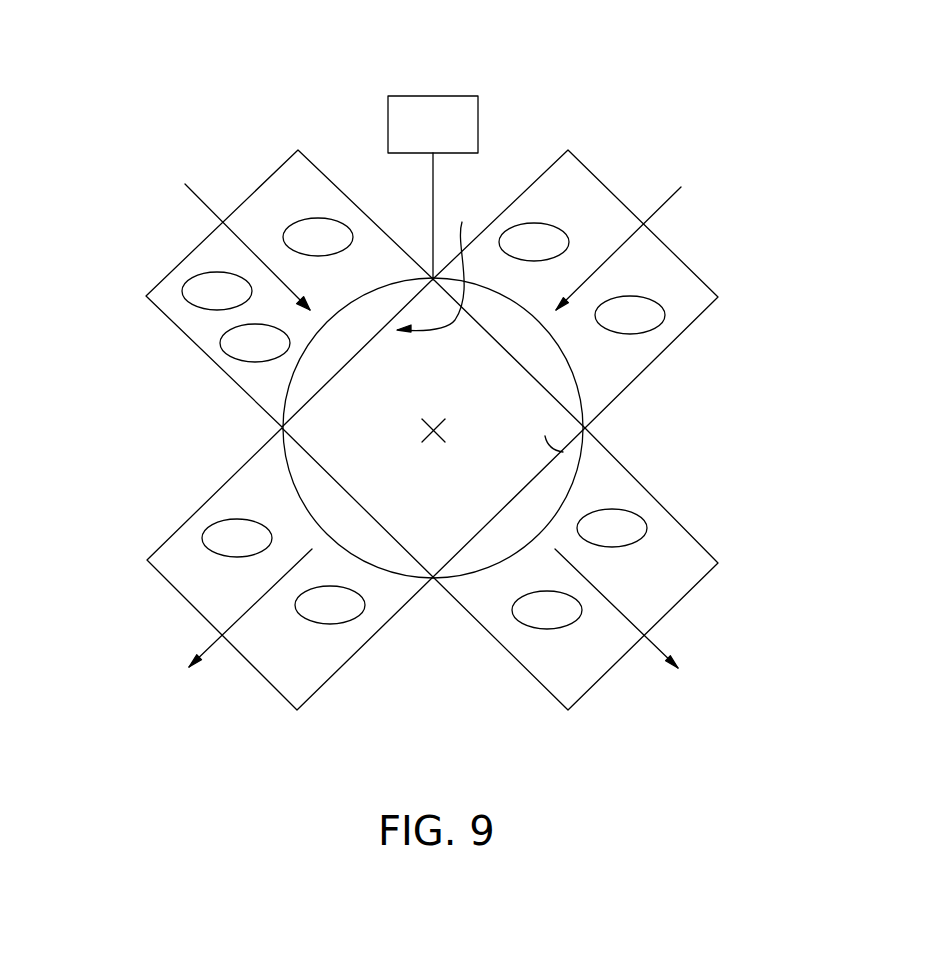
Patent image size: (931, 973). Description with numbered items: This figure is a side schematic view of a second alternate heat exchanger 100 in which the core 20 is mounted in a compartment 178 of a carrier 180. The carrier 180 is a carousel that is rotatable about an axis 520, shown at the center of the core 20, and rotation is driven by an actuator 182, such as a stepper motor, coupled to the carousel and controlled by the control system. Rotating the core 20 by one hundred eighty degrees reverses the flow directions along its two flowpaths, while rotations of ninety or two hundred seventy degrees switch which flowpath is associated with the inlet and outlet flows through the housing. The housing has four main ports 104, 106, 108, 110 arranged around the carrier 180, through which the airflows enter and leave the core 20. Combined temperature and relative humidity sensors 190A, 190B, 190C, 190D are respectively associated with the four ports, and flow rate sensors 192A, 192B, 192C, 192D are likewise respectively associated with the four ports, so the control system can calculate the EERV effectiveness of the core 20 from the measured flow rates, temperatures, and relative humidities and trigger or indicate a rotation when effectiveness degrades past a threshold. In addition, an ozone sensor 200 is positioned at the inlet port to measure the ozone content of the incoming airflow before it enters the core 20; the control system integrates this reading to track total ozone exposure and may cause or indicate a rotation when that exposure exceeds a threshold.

The heat exchanger 100 is at (503, 80).
The main port 104 is at (257, 163).
The main port 106 is at (610, 697).
The main port 108 is at (705, 257).
The main port 110 is at (158, 602).
The compartment 178 is at (440, 264).
The carrier 180 is at (581, 392).
The actuator 182 is at (415, 134).
The core 20 is at (578, 465).
The axis 520 is at (441, 419).
The combined temperature and relative humidity sensor 190A is at (217, 291).
The combined temperature and relative humidity sensor 190B is at (547, 610).
The combined temperature and relative humidity sensor 190C is at (534, 242).
The combined temperature and relative humidity sensor 190D is at (237, 538).
The flow sensor 192A is at (318, 237).
The flow sensor 192B is at (612, 528).
The flow sensor 192C is at (630, 315).
The flow sensor 192D is at (330, 605).
The ozone sensor 200 is at (255, 343).